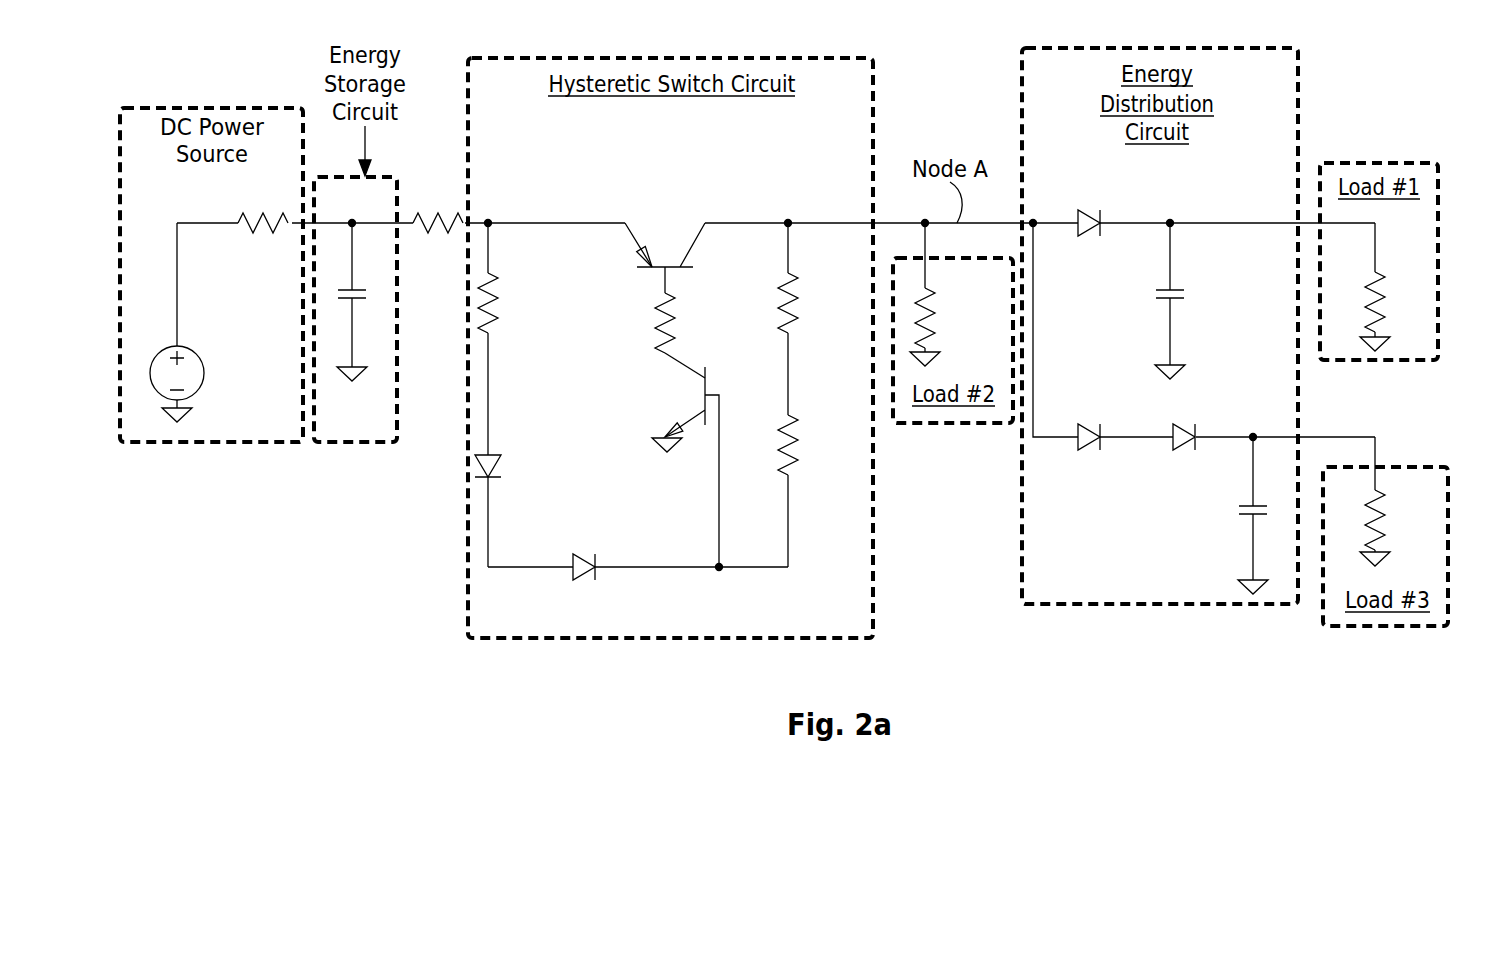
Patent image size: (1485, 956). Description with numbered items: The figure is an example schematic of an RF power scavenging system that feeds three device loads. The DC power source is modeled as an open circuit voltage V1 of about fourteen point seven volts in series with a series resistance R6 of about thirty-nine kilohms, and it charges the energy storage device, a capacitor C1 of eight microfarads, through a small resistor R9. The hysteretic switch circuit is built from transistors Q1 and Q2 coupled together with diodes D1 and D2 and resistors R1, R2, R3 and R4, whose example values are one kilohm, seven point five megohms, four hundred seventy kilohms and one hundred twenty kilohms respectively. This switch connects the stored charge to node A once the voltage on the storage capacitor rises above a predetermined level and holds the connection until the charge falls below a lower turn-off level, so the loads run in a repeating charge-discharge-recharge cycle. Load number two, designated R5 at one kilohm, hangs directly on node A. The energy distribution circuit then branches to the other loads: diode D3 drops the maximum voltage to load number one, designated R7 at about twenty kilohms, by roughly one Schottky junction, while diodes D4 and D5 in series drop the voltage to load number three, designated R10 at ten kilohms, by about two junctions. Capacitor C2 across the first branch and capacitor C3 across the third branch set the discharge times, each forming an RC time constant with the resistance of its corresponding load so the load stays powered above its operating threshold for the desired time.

The open circuit voltage V1 is at (193, 322).
The series resistance R6 is at (263, 223).
The resistor 0.1 ohm R9 is at (438, 223).
The energy storage capacitor C1 is at (360, 302).
The resistor R2 is at (517, 339).
The diode D1 is at (518, 498).
The diode D2 is at (581, 568).
The transistor Q2 is at (665, 201).
The resistor R1 is at (685, 322).
The transistor Q1 is at (655, 409).
The resistor R3 is at (817, 319).
The resistor R4 is at (818, 491).
The load #2 resistor R5 is at (945, 294).
The diode D3 is at (1088, 225).
The capacitor C2 is at (1186, 301).
The diode D4 is at (1088, 438).
The diode D5 is at (1185, 438).
The capacitor C3 is at (1260, 515).
The load #1 resistor R7 is at (1391, 287).
The load #3 resistor R10 is at (1393, 501).